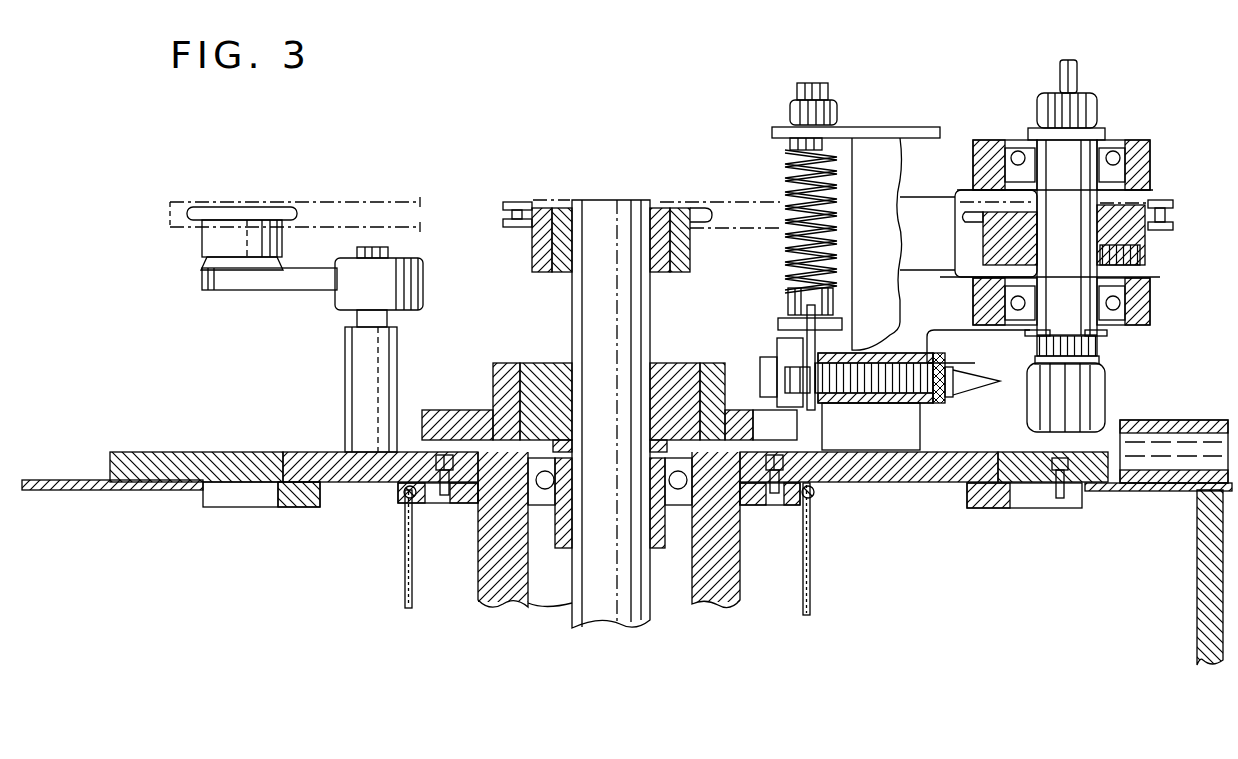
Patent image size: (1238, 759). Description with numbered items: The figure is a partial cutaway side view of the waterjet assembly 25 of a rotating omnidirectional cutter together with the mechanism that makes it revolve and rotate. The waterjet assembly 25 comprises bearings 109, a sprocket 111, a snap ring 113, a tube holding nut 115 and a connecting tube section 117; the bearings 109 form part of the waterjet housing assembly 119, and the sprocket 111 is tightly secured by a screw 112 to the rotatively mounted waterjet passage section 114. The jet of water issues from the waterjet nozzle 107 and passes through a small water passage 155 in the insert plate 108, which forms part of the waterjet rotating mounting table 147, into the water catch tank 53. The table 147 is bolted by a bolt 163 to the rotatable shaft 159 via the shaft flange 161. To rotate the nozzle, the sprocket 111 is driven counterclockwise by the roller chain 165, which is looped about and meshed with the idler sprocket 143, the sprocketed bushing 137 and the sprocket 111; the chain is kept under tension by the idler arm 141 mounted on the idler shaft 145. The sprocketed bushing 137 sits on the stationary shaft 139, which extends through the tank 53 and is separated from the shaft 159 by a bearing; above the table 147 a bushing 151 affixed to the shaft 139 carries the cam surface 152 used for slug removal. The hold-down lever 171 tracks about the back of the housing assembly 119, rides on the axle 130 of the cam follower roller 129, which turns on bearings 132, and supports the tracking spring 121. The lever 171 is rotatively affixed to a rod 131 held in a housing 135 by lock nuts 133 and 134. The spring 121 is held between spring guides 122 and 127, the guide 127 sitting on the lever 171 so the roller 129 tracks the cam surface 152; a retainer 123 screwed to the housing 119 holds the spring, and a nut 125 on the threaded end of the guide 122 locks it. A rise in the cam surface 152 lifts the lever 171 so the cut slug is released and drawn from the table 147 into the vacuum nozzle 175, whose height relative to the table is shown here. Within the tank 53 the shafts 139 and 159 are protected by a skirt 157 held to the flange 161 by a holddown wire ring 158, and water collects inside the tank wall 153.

The waterjet assembly 25 is at (1160, 160).
The water catch tank 53 is at (1030, 617).
The waterjet nozzle 107 is at (1105, 392).
The insert plate 108 is at (1092, 491).
The bearings 109 is at (1130, 140).
The sprocket 111 is at (1140, 253).
The screw 112 is at (1147, 258).
The snap ring 113 is at (1040, 132).
The waterjet passage section 114 is at (1031, 238).
The tube holding nut 115 is at (1097, 112).
The connecting tube section 117 is at (1062, 82).
The waterjet housing assembly 119 is at (958, 165).
The tracking spring 121 is at (790, 176).
The spring guide 122 is at (822, 138).
The retainer 123 is at (892, 127).
The nut 125 is at (790, 110).
The spring guide 127 is at (833, 305).
The cam follower roller 129 is at (777, 347).
The axle 130 is at (778, 326).
The rod 131 is at (855, 398).
The bearings 132 is at (763, 375).
The lock nut 133 is at (945, 400).
The lock nut 134 is at (787, 380).
The housing 135 is at (905, 353).
The sprocketed bushing 137 is at (678, 210).
The stationary shaft 139 is at (606, 200).
The idler arm 141 is at (288, 288).
The idler sprocket 143 is at (197, 208).
The idler shaft 145 is at (393, 316).
The waterjet rotating mounting table 147 is at (337, 483).
The bushing 151 is at (528, 363).
The cam surface 152 is at (457, 410).
The tank wall 153 is at (1207, 548).
The water passage 155 is at (1060, 500).
The skirt 157 is at (812, 578).
The holddown wire ring 158 is at (403, 492).
The rotatable shaft 159 is at (498, 600).
The shaft flange 161 is at (436, 487).
The bolt 163 is at (455, 503).
The roller chain 165 is at (345, 200).
The hold-down lever 171 is at (808, 338).
The vacuum nozzle 175 is at (1175, 420).